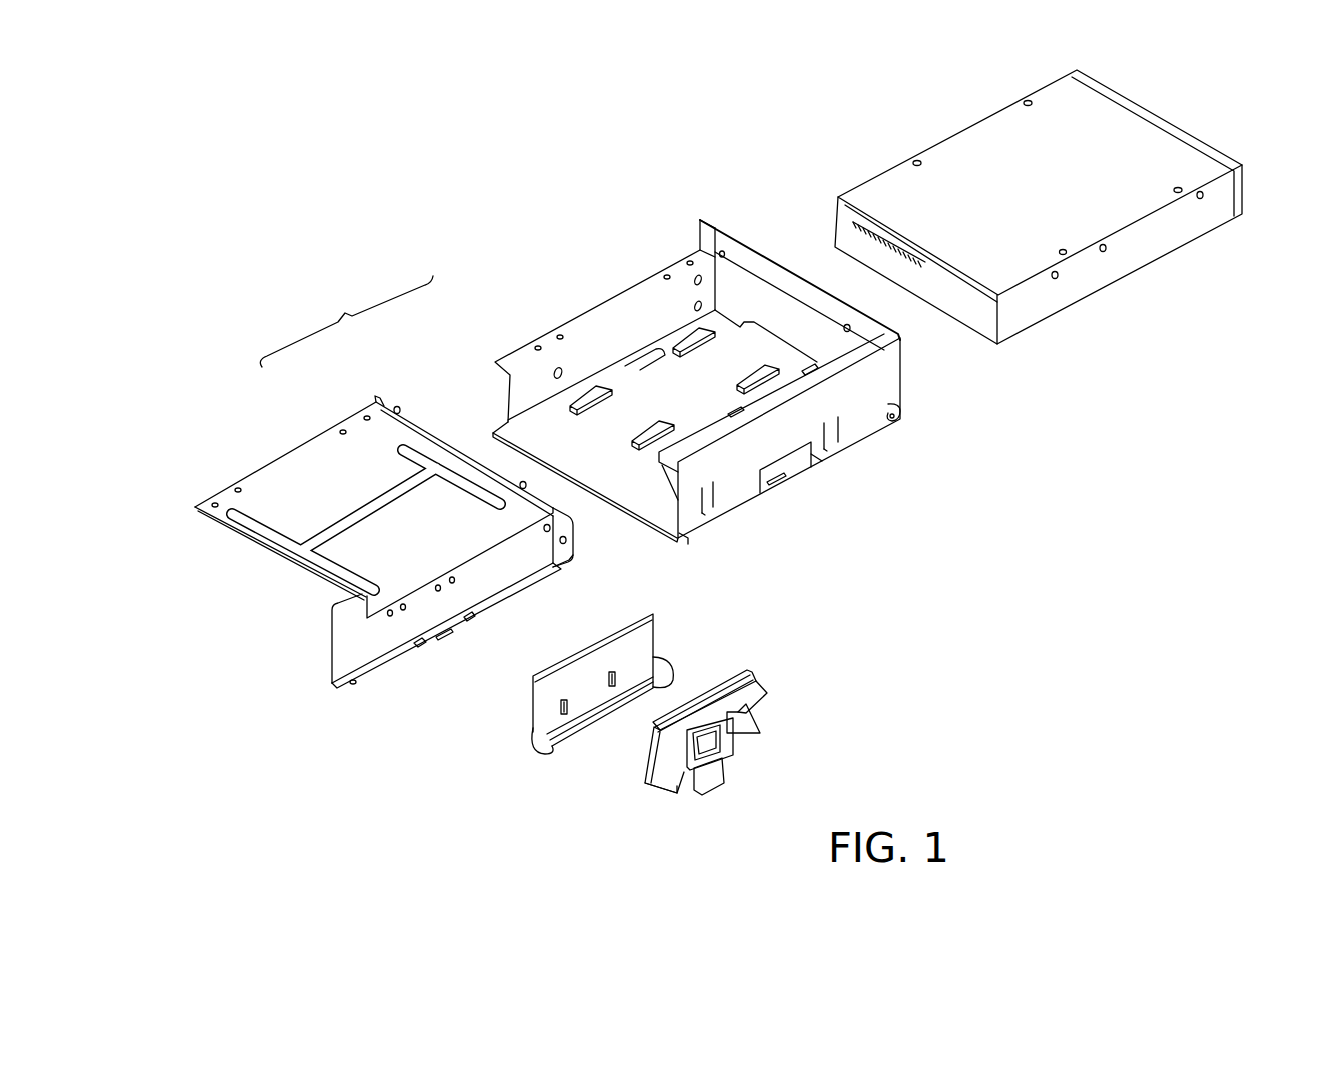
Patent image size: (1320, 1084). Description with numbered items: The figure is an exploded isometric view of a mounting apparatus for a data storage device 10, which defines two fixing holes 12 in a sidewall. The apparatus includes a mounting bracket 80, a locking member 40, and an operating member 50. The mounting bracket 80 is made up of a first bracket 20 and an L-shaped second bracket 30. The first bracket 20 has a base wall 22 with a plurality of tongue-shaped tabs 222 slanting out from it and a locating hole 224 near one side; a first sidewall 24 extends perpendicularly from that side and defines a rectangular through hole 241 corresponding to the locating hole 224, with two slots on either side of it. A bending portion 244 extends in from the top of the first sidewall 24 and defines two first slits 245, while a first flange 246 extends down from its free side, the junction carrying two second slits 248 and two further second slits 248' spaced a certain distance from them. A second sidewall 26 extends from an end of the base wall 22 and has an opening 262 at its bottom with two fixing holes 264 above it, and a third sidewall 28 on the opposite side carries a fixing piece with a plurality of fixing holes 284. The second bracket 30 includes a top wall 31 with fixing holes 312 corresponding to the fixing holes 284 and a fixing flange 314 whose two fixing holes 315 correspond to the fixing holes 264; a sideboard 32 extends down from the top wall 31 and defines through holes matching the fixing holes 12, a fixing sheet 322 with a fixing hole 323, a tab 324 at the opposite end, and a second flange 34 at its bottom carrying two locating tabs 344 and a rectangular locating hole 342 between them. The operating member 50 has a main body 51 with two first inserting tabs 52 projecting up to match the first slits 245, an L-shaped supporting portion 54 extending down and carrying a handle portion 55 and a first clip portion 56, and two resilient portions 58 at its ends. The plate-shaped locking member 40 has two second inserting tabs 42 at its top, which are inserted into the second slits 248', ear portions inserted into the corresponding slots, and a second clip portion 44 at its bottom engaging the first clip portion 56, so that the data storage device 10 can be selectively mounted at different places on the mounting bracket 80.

The data storage device 10 is at (866, 158).
The fixing holes 12 is at (1060, 280).
The first bracket 20 is at (492, 338).
The base wall 22 is at (506, 432).
The first sidewall 24 is at (883, 394).
The second sidewall 26 is at (732, 243).
The third sidewall 28 is at (645, 318).
The second bracket 30 is at (322, 406).
The top wall 31 is at (300, 450).
The sideboard 32 is at (345, 648).
The second flange 34 is at (345, 688).
The locking member 40 is at (505, 740).
The second inserting tabs 42 is at (652, 614).
The second clip portion 44 is at (583, 726).
The operating member 50 is at (780, 702).
The main body 51 is at (752, 682).
The first inserting tabs 52 is at (744, 668).
The supporting portion 54 is at (730, 752).
The handle portion 55 is at (712, 780).
The first clip portion 56 is at (668, 790).
The resilient portions 58 is at (750, 726).
The mounting bracket 80 is at (346, 321).
The tongue-shaped tabs 222 is at (594, 391).
The locating hole 224 is at (784, 482).
The through hole 241 is at (814, 455).
The bending portion 244 is at (902, 340).
The first slits 245 is at (818, 369).
The first flange 246 is at (688, 540).
The second slits 248 is at (736, 393).
The second slits 248' is at (657, 414).
The opening 262 is at (767, 307).
The fixing holes 264 is at (848, 326).
The fixing holes 284 is at (535, 345).
The fixing holes 312 is at (236, 486).
The fixing flange 314 is at (372, 398).
The fixing holes 315 is at (395, 406).
The fixing sheet 322 is at (571, 566).
The fixing hole 323 is at (574, 544).
The tab 324 is at (338, 610).
The locating hole 342 is at (445, 636).
The locating tabs 344 is at (470, 618).